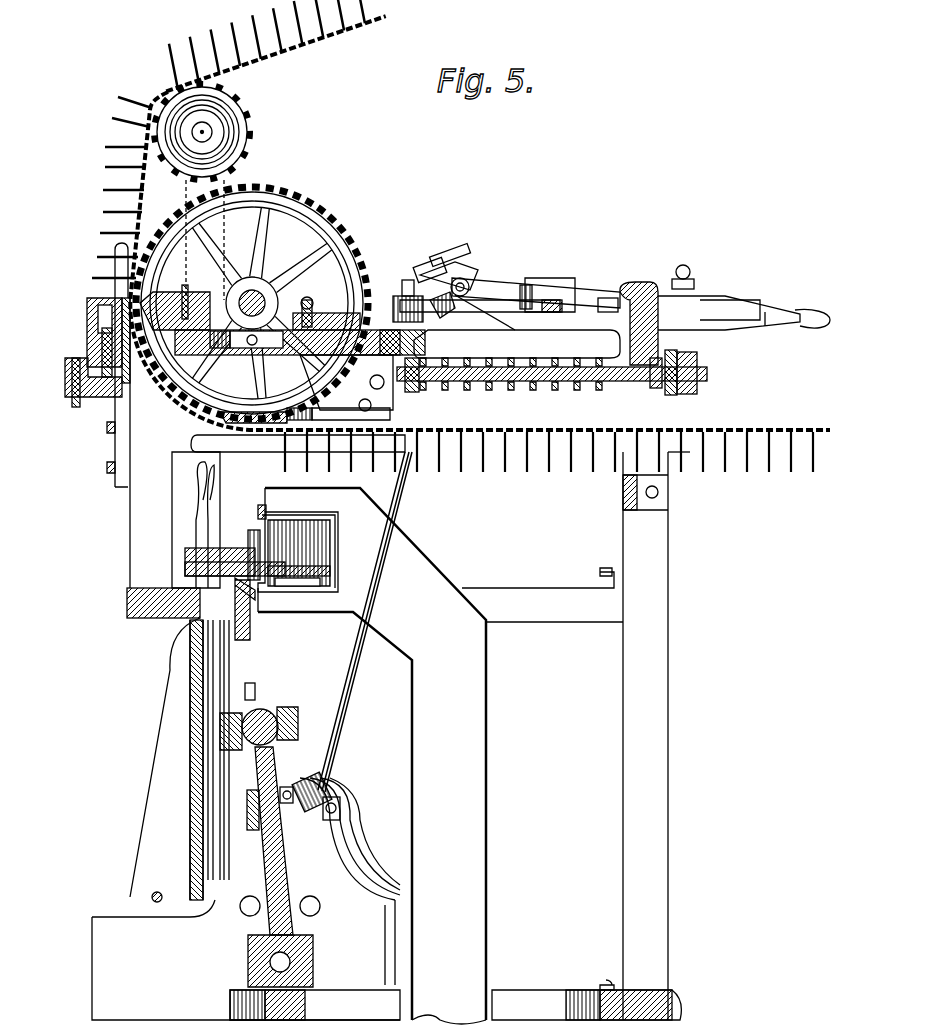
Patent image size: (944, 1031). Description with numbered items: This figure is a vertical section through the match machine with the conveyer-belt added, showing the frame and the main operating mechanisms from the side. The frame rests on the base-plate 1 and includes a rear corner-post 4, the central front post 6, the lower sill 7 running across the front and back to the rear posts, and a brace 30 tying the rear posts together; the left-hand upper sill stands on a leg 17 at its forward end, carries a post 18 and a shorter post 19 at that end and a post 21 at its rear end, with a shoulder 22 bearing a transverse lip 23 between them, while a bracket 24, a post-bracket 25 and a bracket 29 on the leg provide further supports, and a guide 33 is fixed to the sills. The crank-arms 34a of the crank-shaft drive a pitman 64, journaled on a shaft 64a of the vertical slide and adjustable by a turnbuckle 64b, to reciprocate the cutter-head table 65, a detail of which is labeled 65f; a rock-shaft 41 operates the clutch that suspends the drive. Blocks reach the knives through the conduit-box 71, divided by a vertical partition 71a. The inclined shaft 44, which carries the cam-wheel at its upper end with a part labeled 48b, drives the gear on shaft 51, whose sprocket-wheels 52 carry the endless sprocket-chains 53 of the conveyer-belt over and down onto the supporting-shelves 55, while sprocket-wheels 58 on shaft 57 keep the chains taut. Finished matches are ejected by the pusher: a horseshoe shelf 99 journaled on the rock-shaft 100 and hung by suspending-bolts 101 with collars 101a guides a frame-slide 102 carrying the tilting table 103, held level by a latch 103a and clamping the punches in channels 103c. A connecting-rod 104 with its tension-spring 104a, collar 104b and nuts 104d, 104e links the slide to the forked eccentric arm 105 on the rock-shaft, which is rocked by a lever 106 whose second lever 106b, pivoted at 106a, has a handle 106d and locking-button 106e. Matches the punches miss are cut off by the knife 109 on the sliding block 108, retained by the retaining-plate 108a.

The base-plate 1 is at (550, 990).
The rear corner-post 4 is at (670, 780).
The central front post 6 is at (170, 760).
The sill 7 is at (560, 625).
The leg 17 is at (130, 540).
The post 18 is at (186, 198).
The shorter post 19 is at (280, 372).
The post 21 is at (660, 345).
The shoulder 22 is at (440, 280).
The lip 23 is at (440, 262).
The bracket 24 is at (515, 320).
The post-bracket 25 is at (342, 860).
The bracket 29 is at (122, 270).
The brace 30 is at (622, 498).
The guide 33 is at (215, 475).
The crank-arms 34a is at (265, 935).
The rock-shaft 41 is at (157, 893).
The inclined shaft 44 is at (345, 705).
The link 48b is at (470, 275).
The shaft 51 is at (262, 290).
The sprocket-wheels 52 is at (354, 235).
The sprocket-chains 53 is at (293, 50).
The supporting-shelves 55 is at (494, 455).
The shaft 57 is at (205, 130).
The sprocket-wheels 58 is at (242, 115).
The pitman 64 is at (282, 775).
The shaft 64a is at (270, 712).
The turnbuckle 64b is at (260, 832).
The table 65 is at (180, 566).
The flange 65f is at (244, 596).
The conduit-box 71 is at (338, 576).
The vertical partition 71a is at (250, 530).
The shelf 99 is at (377, 364).
The rock-shaft 100 is at (628, 282).
The suspending-bolts 101 is at (448, 262).
The collars 101a is at (430, 345).
The frame-slide 102 is at (392, 296).
The tilting table 103 is at (318, 312).
The latch or button 103a is at (312, 296).
The channels 103c is at (178, 298).
The connecting-rod 104 is at (707, 380).
The tension-spring 104a is at (560, 385).
The collar 104b is at (430, 388).
The nut 104d is at (680, 355).
The nut 104e is at (698, 366).
The eccentric arm 105 is at (655, 280).
The lever 106 is at (582, 290).
The pivot of second lever 106a is at (548, 276).
The second lever 106b is at (512, 292).
The handle 106d is at (805, 280).
The locking-button 106e is at (690, 272).
The block 108 is at (90, 352).
The retaining-plate 108a is at (81, 360).
The saw or knife 109 is at (145, 362).